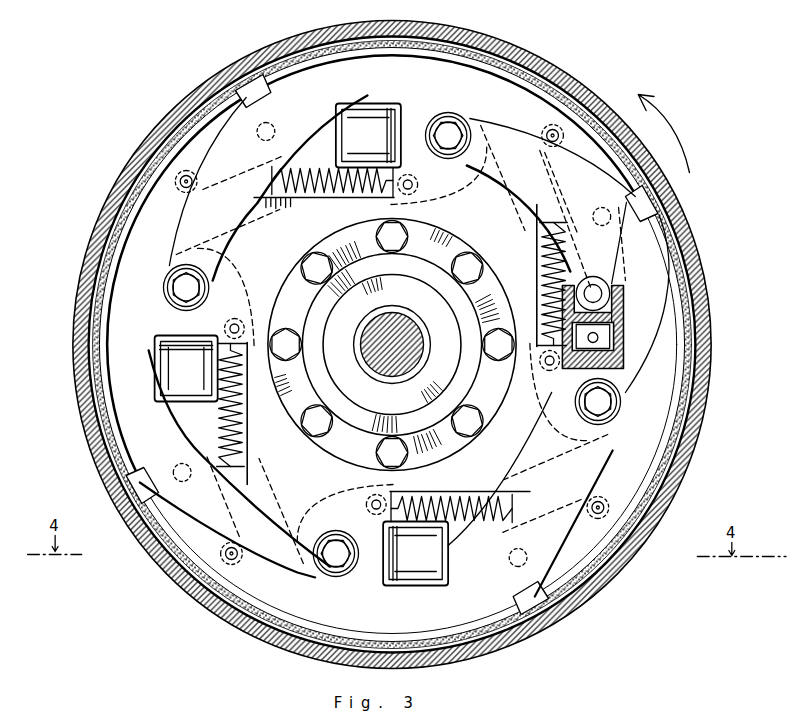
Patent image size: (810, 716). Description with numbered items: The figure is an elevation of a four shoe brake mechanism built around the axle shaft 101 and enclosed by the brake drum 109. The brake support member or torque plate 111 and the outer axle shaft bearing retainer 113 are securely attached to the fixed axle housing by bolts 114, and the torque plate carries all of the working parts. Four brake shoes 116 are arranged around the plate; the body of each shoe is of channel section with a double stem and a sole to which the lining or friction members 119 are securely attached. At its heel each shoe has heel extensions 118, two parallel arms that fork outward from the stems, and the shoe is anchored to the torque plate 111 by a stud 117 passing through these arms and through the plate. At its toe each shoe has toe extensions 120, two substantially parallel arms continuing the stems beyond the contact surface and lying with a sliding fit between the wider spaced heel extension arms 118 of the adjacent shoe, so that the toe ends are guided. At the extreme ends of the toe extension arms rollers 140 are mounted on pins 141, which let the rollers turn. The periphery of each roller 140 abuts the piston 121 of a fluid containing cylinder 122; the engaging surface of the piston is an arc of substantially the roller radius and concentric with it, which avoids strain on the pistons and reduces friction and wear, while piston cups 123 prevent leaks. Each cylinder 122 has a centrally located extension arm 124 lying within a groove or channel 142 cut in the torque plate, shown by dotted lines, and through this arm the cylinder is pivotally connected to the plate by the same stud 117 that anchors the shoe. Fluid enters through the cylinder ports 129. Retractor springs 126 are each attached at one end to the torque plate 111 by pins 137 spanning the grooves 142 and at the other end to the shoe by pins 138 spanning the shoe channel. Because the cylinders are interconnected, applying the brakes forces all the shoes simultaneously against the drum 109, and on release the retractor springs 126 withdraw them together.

The axle shaft 101 is at (402, 327).
The brake drum 109 is at (700, 314).
The brake support member or torque plate 111 is at (493, 213).
The outer axle shaft bearing retainer 113 is at (392, 345).
The bolts 114 is at (402, 238).
The brake shoes 116 is at (395, 342).
The studs 117 is at (458, 130).
The heel extensions 118 is at (391, 322).
The lining or friction members 119 is at (290, 47).
The toe extensions 120 is at (698, 196).
The pistons 121 is at (625, 318).
The fluid containing cylinders 122 is at (641, 368).
The piston cups 123 is at (625, 330).
The cylinder extension arms 124 is at (413, 112).
The retractor springs 126 is at (333, 194).
The cylinder ports 129 is at (580, 339).
The pins 137 is at (411, 187).
The pins 138 is at (183, 178).
The rollers 140 is at (612, 293).
The pins 141 is at (597, 290).
The grooves or channels 142 is at (462, 182).